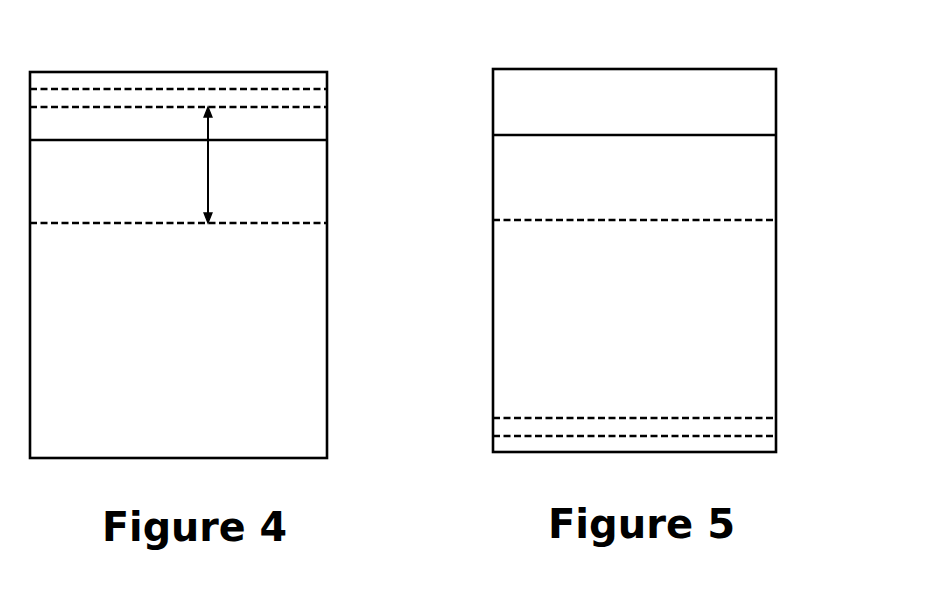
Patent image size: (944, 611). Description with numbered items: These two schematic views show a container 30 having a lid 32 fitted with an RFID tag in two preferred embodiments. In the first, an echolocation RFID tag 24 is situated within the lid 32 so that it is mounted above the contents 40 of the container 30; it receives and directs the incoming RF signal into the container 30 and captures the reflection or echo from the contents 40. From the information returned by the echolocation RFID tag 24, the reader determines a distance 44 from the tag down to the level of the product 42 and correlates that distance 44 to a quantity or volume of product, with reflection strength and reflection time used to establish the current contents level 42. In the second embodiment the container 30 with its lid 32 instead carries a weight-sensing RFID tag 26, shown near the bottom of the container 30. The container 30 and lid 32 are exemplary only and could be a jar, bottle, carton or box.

In FIG. 4, the echolocation RFID tag 24 is at (160, 98).
In FIG. 5, the weight-sensing RFID tag 26 is at (713, 427).
In FIG. 4, the container 30 is at (329, 363).
In FIG. 5, the container 30 is at (493, 373).
In FIG. 4, the lid 32 is at (327, 121).
In FIG. 5, the lid 32 is at (493, 120).
In FIG. 4, the contents 40 is at (200, 397).
In FIG. 5, the contents 40 is at (636, 374).
In FIG. 4, the level of the product 42 is at (130, 223).
In FIG. 5, the level of the product 42 is at (605, 218).
In FIG. 4, the distance 44 is at (213, 173).